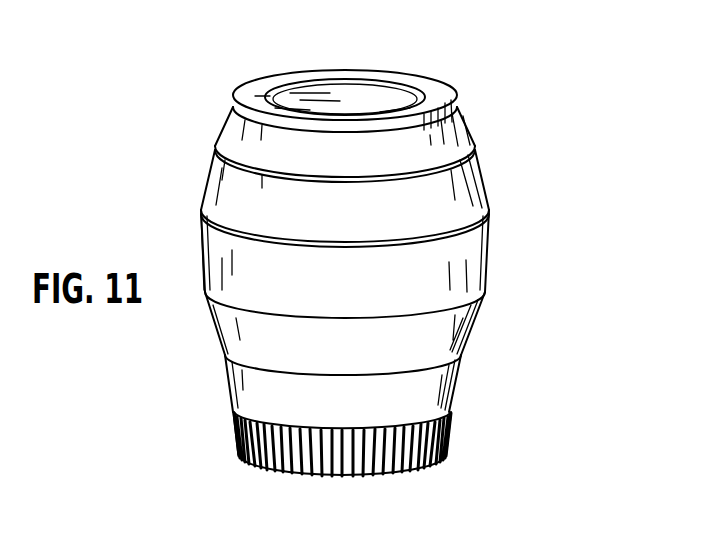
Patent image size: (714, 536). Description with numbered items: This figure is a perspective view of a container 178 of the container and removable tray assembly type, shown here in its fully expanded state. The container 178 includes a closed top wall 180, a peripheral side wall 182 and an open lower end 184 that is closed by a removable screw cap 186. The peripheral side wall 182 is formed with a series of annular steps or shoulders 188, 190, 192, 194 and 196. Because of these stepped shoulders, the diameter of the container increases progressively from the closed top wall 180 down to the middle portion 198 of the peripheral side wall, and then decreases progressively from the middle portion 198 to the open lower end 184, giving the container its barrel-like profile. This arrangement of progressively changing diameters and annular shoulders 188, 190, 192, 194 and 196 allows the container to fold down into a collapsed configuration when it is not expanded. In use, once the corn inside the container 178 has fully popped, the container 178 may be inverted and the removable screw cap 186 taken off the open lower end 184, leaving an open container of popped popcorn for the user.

The container 178 is at (594, 129).
The closed top wall 180 is at (363, 92).
The peripheral side wall 182 is at (193, 236).
The open lower end 184 is at (214, 411).
The removable screw cap 186 is at (375, 476).
The annular step or shoulder 188 is at (465, 146).
The annular step or shoulder 190 is at (486, 203).
The annular step or shoulder 192 is at (484, 293).
The annular step or shoulder 194 is at (466, 355).
The annular step or shoulder 196 is at (451, 411).
The middle portion 198 is at (493, 247).